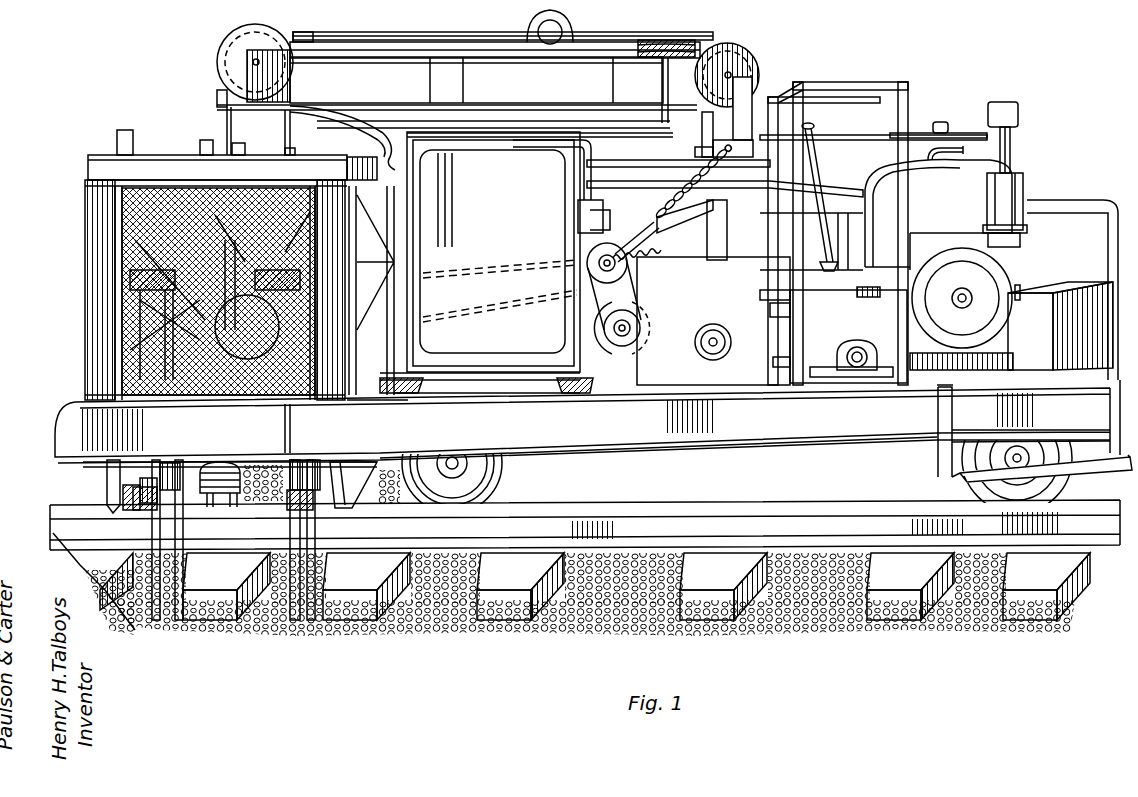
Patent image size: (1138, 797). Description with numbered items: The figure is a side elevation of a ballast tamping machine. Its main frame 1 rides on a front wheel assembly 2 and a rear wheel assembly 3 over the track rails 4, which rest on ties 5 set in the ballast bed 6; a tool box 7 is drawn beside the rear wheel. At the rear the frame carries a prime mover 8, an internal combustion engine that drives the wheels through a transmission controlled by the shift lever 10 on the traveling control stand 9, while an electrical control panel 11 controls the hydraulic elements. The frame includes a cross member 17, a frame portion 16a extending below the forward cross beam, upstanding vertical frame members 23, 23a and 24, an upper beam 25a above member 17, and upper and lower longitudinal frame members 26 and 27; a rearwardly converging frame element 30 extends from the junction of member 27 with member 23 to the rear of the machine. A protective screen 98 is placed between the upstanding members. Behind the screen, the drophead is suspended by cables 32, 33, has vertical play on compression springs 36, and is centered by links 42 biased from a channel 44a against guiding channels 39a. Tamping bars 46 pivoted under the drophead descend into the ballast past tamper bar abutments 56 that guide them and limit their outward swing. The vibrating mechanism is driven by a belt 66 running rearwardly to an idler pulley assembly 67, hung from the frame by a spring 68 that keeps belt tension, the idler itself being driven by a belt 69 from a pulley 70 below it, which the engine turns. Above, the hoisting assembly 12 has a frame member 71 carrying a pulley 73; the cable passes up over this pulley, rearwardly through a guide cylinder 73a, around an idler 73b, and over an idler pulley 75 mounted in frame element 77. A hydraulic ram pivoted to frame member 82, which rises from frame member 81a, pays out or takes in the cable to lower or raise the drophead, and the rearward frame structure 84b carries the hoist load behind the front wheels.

The ballast tamping frame 1 is at (60, 413).
The front wheel assembly 2 is at (447, 518).
The rear wheel assembly 3 is at (1022, 478).
The track rails 4 is at (800, 533).
The ties 5 is at (510, 607).
The ballast bed 6 is at (417, 630).
The tool box 7 is at (993, 362).
The prime mover 8 is at (970, 200).
The traveling control stand 9 is at (843, 280).
The shift lever 10 is at (817, 163).
The electrical control panel 11 is at (503, 239).
The hoisting assembly 12 is at (567, 72).
The frame portion 16a is at (107, 488).
The cross member 17 is at (348, 470).
The vertical frame member 23 is at (333, 383).
The rearward upstanding element 23a is at (372, 332).
The vertical frame member 24 is at (97, 284).
The upper beam 25a is at (350, 167).
The upper longitudinal frame member 26 is at (172, 165).
The lower longitudinal frame member 27 is at (203, 437).
The rearwardly converging frame element 30 is at (623, 430).
The cable 32 is at (228, 123).
The cable 33 is at (288, 128).
The compression spring 36 is at (222, 462).
The guiding channel 39a is at (127, 130).
The link 42 is at (128, 300).
The channel 44a is at (135, 252).
The tamping bar 46 is at (150, 527).
The tamper bar abutment 56 is at (308, 462).
The belt 66 is at (527, 262).
The idler pulley assembly 67 is at (607, 253).
The spring 68 is at (680, 190).
The belt 69 is at (602, 342).
The pulley 70 is at (640, 325).
The frame member 71 is at (486, 53).
The pulley 73 is at (217, 52).
The guide cylinder 73a is at (345, 35).
The idler 73b is at (667, 42).
The idler pulley 75 is at (760, 43).
The frame element 77 is at (730, 42).
The frame member 81a is at (320, 115).
The frame member 82 is at (220, 97).
The rearward frame structure 84b is at (768, 100).
The protective screen 98 is at (147, 220).